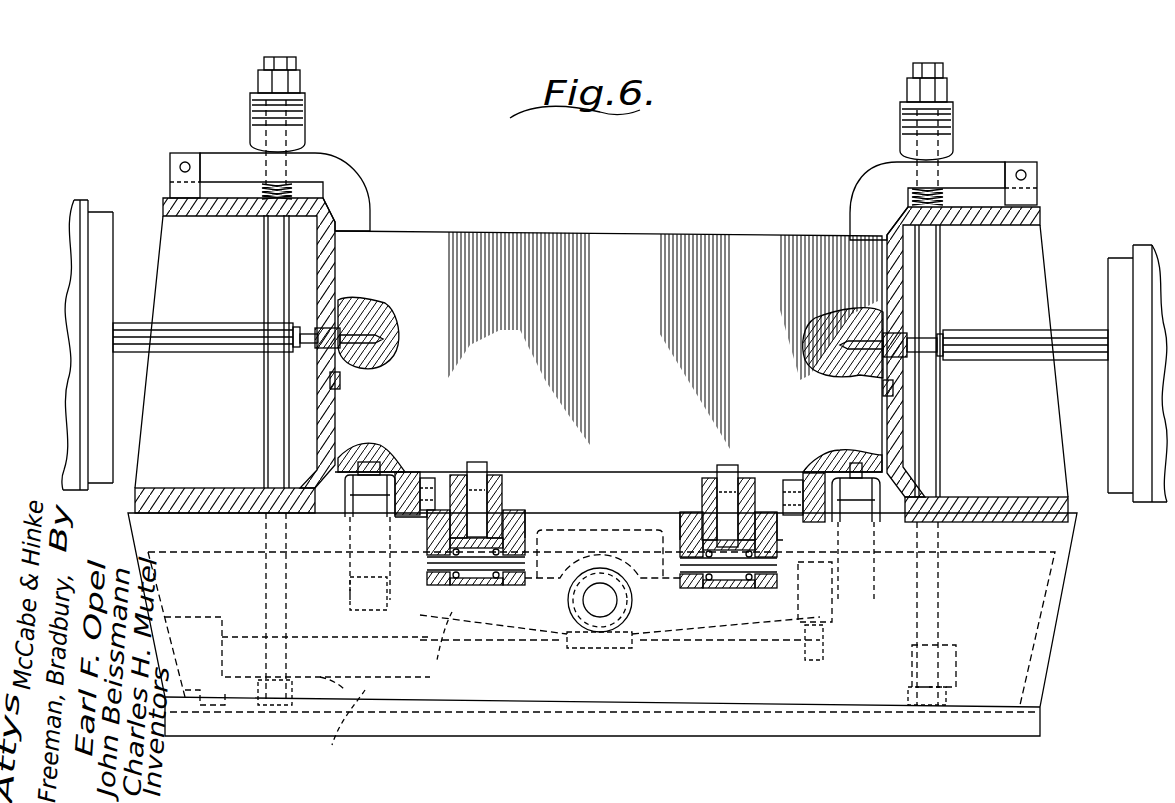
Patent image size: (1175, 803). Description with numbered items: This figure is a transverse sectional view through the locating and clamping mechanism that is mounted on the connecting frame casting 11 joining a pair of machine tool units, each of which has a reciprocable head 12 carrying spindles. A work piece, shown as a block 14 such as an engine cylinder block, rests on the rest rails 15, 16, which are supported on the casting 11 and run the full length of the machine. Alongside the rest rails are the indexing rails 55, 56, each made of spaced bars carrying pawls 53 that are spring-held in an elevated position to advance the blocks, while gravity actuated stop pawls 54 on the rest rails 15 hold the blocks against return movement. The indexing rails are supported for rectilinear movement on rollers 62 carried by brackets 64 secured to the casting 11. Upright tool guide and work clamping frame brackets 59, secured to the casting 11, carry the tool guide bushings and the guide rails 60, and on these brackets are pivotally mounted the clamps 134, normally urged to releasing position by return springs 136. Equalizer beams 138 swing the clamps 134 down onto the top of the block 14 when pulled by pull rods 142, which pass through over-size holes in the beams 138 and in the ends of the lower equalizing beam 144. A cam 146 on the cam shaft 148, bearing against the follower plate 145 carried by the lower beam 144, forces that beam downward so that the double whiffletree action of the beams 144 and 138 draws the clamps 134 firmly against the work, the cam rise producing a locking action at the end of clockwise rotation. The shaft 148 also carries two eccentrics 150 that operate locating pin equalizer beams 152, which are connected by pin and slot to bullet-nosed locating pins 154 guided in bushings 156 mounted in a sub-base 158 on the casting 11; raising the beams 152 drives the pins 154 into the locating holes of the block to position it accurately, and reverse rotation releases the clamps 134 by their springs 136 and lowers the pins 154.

The connecting frame casting 11 is at (998, 628).
The reciprocable head 12 is at (72, 300).
The block 14 is at (522, 240).
The rest rail 15 is at (410, 474).
The rest rail 16 is at (805, 485).
The pawl 53 is at (480, 462).
The stop pawl 54 is at (430, 476).
The indexing rail 55 is at (500, 492).
The indexing rail 56 is at (704, 500).
The tool guide and work clamping frame bracket 59 is at (338, 278).
The guide rail 60 is at (343, 382).
The roller 62 is at (455, 586).
The bracket 64 is at (525, 530).
The clamp 134 is at (362, 205).
The return spring 136 is at (290, 188).
The equalizer beam 138 is at (305, 137).
The pull rod 142 is at (277, 291).
The lower equalizing beam 144 is at (339, 724).
The follower plate 145 is at (590, 648).
The cam 146 is at (577, 621).
The cam shaft 148 is at (614, 603).
The eccentric 150 is at (585, 583).
The locating pin equalizer beam 152 is at (455, 612).
The locating pin 154 is at (375, 462).
The bushing 156 is at (345, 505).
The sub-base 158 is at (138, 533).